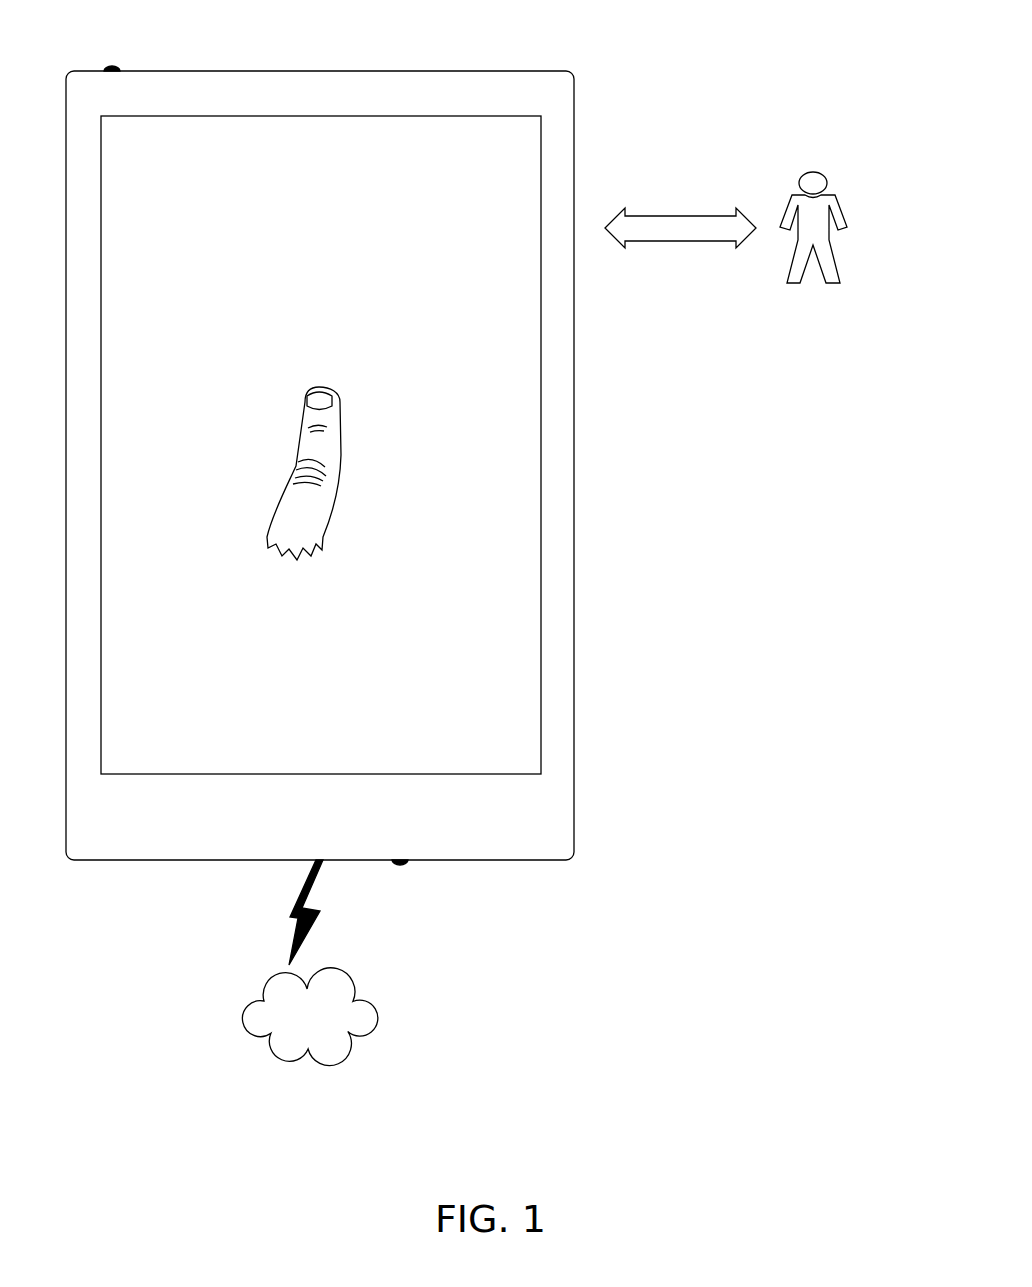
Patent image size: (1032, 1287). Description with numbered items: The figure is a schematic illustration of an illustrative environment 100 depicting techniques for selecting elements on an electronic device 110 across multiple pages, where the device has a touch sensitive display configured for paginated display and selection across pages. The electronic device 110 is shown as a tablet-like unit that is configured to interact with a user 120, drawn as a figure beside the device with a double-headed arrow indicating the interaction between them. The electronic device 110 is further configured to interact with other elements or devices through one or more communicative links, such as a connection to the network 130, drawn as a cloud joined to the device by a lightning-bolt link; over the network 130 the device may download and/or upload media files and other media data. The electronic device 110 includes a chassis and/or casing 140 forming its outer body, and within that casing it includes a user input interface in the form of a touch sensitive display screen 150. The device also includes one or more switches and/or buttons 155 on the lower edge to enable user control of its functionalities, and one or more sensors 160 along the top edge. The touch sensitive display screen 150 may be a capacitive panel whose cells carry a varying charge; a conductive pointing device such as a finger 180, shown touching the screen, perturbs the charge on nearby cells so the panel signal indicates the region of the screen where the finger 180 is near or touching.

The illustrative environment 100 is at (843, 62).
The electronic device 110 is at (580, 113).
The user 120 is at (823, 173).
The network 130 is at (380, 1015).
The chassis and/or casing 140 is at (575, 590).
The touch sensitive display screen 150 is at (543, 513).
The switches and/or buttons 155 is at (398, 864).
The sensors 160 is at (113, 66).
The finger 180 is at (340, 458).